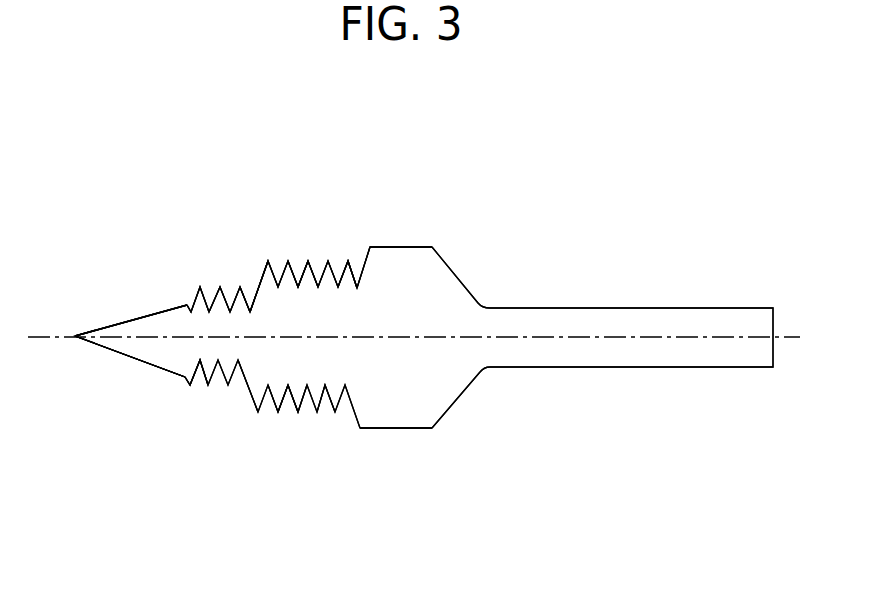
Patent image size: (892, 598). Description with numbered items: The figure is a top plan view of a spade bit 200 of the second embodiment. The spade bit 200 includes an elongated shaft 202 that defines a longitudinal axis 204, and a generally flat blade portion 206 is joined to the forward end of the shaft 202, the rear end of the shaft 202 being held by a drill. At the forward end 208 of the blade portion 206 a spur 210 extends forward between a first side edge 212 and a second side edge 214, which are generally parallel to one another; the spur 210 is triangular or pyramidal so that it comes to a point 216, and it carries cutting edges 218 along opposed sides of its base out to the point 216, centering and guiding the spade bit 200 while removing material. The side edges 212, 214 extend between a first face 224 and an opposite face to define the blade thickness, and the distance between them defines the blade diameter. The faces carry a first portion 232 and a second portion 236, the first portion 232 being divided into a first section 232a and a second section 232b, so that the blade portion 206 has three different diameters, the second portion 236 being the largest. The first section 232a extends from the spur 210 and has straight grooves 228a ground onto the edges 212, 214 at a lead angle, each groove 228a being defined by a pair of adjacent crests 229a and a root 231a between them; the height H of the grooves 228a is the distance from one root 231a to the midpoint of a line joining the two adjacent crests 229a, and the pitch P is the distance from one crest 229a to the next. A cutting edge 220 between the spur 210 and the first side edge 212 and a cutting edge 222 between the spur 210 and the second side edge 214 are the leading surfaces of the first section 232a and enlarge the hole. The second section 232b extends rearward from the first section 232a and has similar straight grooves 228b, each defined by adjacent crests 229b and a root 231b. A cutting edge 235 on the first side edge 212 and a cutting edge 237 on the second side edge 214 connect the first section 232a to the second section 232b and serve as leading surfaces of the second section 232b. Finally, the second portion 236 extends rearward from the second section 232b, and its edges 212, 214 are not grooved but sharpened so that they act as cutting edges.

The spade bit 200 is at (535, 268).
The elongated shaft 202 is at (628, 308).
The longitudinal axis 204 is at (709, 337).
The blade portion 206 is at (426, 268).
The forward end of the blade portion 208 is at (185, 304).
The spur 210 is at (107, 353).
The first side edge 212 is at (219, 284).
The second side edge 214 is at (203, 380).
The point 216 is at (73, 338).
The cutting edges 218 is at (127, 321).
The cutting edge 220 is at (187, 305).
The cutting edge 222 is at (186, 378).
The first face 224 is at (337, 327).
The grooves 228a is at (197, 288).
The grooves 228b is at (300, 282).
The crests 229a is at (238, 283).
The crests 229b is at (350, 262).
The root 231a is at (250, 312).
The root 231b is at (357, 288).
The first portion 232 is at (187, 485).
The first section 232a is at (187, 198).
The second section 232b is at (357, 198).
The cutting edge 235 is at (258, 288).
The second portion 236 is at (370, 198).
The cutting edge 237 is at (251, 385).
The height of the grooves H is at (285, 386).
The pitch of the grooves P is at (325, 425).